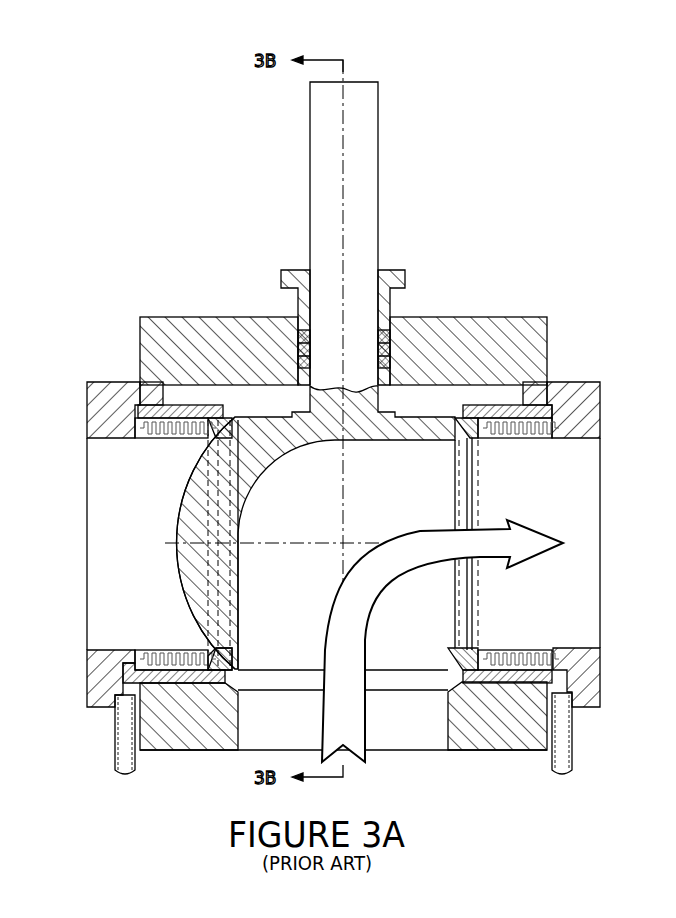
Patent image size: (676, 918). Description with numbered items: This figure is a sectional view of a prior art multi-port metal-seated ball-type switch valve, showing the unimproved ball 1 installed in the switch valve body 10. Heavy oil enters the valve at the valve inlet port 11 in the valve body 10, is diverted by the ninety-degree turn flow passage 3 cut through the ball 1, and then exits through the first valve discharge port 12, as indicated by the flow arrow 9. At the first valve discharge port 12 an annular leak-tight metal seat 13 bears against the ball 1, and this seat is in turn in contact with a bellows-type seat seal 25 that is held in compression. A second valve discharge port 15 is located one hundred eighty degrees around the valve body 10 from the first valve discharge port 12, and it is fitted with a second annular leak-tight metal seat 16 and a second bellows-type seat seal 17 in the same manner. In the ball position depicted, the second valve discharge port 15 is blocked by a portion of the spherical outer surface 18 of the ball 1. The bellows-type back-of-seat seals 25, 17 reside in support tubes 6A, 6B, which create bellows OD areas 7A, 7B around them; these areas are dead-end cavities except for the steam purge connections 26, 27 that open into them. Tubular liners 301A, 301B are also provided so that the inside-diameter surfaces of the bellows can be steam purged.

The ball 1 is at (187, 527).
The 90-degree turn flow passage 3 is at (403, 517).
The support tube 6A is at (490, 413).
The support tube 6B is at (192, 407).
The bellows OD area 7A is at (525, 428).
The bellows OD area 7B is at (155, 390).
The flow arrow 9 is at (535, 545).
The switch valve body 10 is at (233, 343).
The valve inlet port 11 is at (395, 730).
The first valve discharge port 12 is at (568, 487).
The annular leak-tight metal seat 13 is at (465, 680).
The second valve discharge port 15 is at (112, 467).
The second annular leak-tight metal seat 16 is at (222, 660).
The bellows-type seat seal 17 is at (168, 657).
The spherical outer surface 18 is at (187, 597).
The bellows-type seat seal 25 is at (512, 668).
The steam purge connection 26 is at (572, 753).
The steam purge connection 27 is at (113, 763).
The tubular liner 301A is at (530, 437).
The tubular liner 301B is at (173, 438).